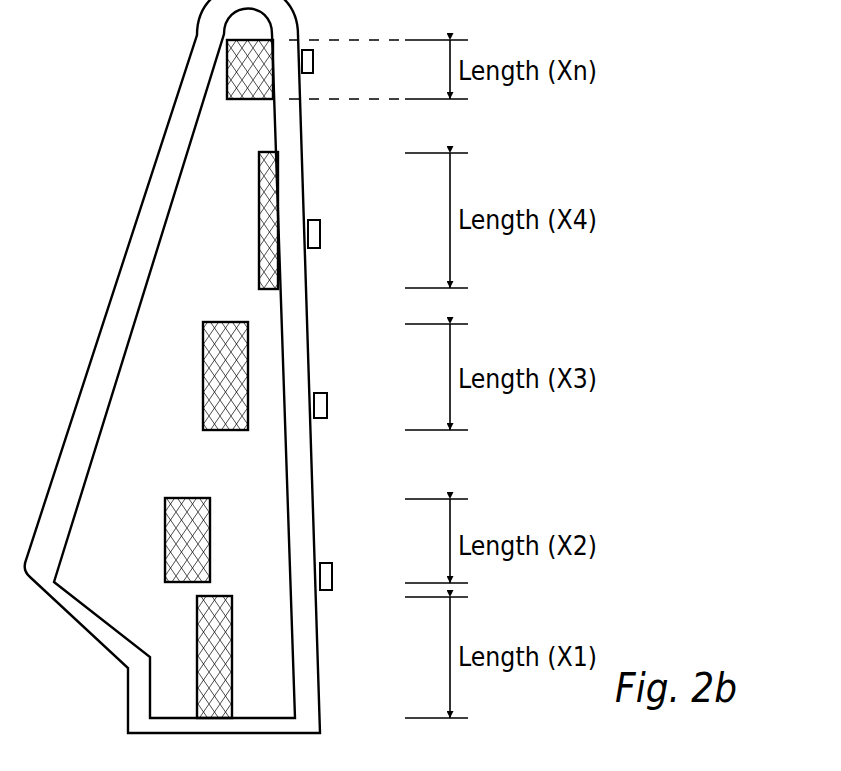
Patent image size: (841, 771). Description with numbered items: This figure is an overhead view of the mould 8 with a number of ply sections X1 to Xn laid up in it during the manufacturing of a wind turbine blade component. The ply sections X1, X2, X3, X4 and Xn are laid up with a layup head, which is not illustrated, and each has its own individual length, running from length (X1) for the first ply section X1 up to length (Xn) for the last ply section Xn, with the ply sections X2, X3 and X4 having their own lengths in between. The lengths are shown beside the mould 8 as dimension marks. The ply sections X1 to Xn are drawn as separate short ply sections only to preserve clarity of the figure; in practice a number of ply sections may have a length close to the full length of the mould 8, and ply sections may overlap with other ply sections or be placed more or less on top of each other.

The mould 8 is at (98, 212).
The ply section Xn is at (227, 80).
The ply section X4 is at (259, 237).
The ply section X3 is at (204, 377).
The ply section X2 is at (165, 552).
The ply section X1 is at (197, 698).